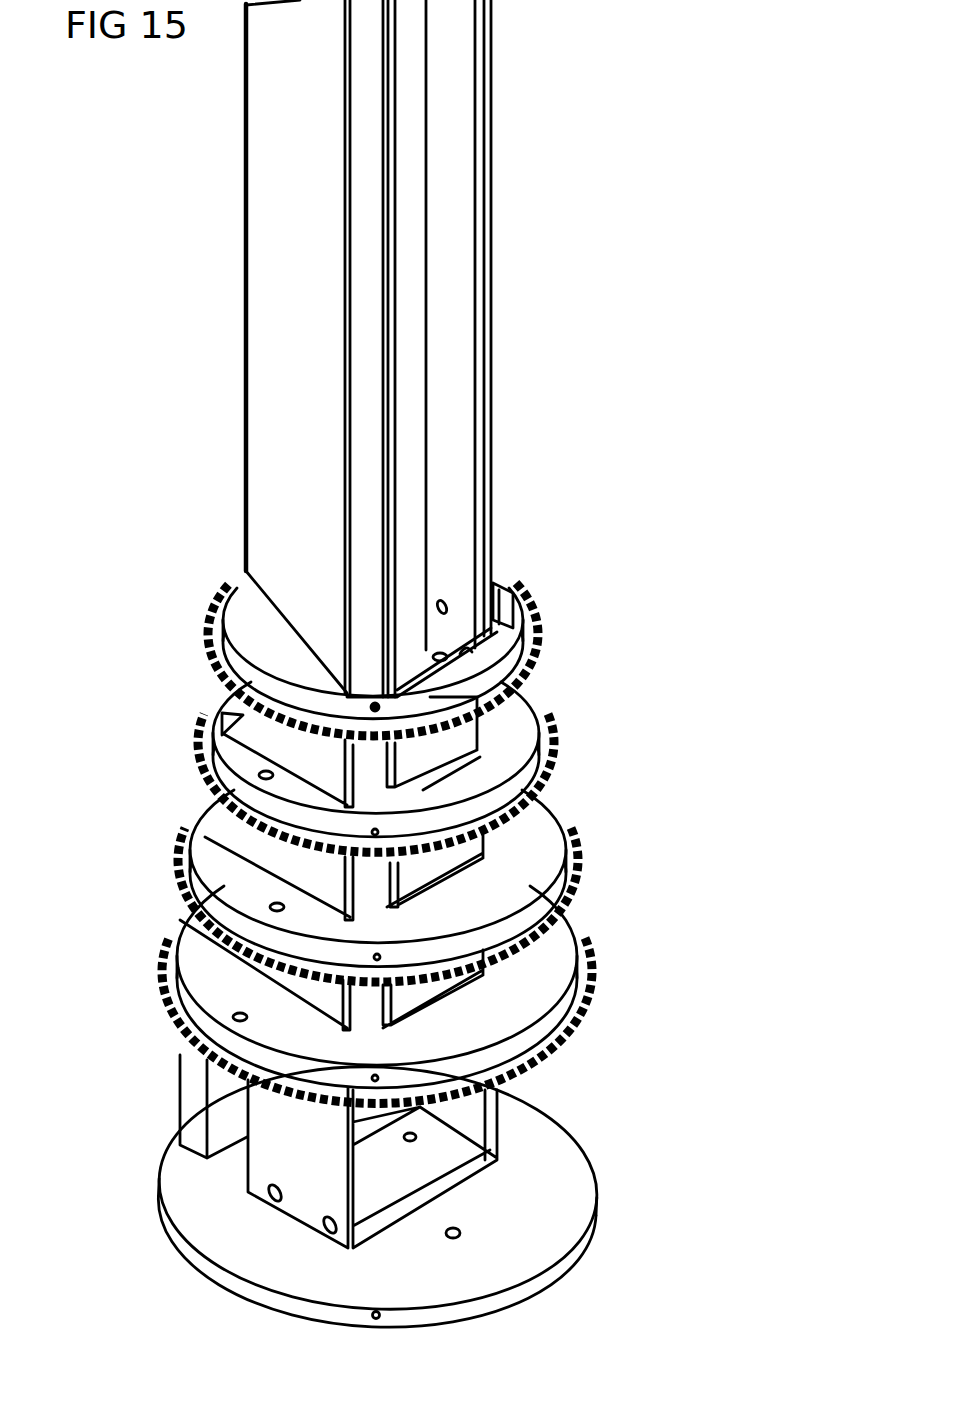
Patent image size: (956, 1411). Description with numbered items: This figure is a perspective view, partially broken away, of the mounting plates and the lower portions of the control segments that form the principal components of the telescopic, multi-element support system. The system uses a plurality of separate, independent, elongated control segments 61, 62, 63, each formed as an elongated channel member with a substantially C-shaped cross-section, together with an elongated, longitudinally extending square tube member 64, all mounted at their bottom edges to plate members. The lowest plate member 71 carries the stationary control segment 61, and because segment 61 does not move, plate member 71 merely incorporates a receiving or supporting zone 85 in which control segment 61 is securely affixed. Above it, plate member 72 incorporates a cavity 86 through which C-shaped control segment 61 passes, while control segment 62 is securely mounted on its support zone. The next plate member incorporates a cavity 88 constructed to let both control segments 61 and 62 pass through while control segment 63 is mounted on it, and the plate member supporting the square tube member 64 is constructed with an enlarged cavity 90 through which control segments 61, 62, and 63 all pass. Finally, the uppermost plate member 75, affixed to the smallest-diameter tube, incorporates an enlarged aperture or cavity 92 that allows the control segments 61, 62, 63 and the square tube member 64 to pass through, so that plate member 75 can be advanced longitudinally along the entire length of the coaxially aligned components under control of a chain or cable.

The square tube member 64 is at (452, 338).
The plate member 75 is at (505, 585).
The enlarged aperture or cavity 92 is at (228, 600).
The enlarged cavity 90 is at (222, 712).
The cavity 88 is at (200, 826).
The control segment 63 is at (370, 875).
The plate member 72 is at (530, 972).
The cavity 86 is at (228, 950).
The control segment 62 is at (188, 1056).
The receiving or supporting zone 85 is at (447, 1132).
The control segment 61 is at (297, 1193).
The plate member 71 is at (527, 1220).